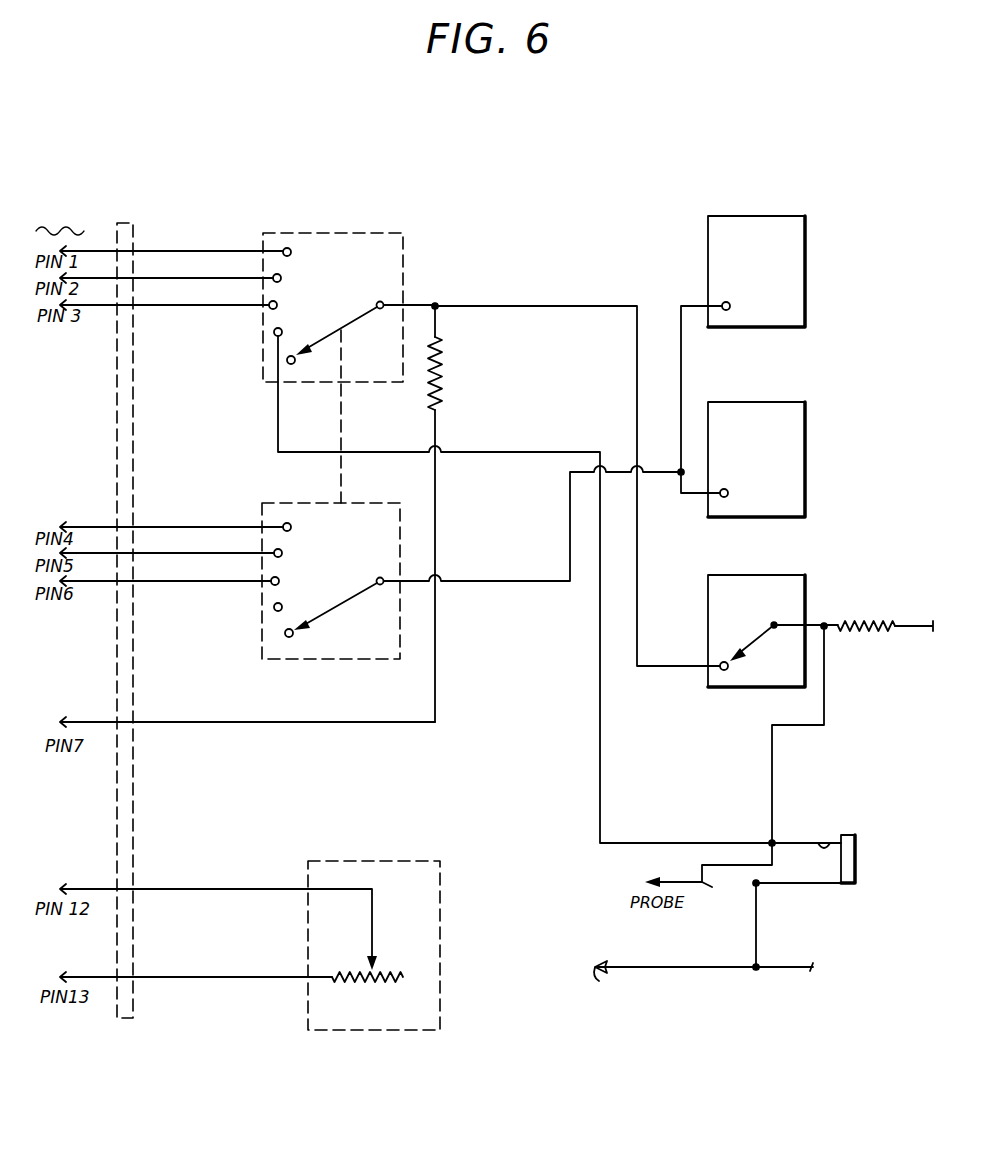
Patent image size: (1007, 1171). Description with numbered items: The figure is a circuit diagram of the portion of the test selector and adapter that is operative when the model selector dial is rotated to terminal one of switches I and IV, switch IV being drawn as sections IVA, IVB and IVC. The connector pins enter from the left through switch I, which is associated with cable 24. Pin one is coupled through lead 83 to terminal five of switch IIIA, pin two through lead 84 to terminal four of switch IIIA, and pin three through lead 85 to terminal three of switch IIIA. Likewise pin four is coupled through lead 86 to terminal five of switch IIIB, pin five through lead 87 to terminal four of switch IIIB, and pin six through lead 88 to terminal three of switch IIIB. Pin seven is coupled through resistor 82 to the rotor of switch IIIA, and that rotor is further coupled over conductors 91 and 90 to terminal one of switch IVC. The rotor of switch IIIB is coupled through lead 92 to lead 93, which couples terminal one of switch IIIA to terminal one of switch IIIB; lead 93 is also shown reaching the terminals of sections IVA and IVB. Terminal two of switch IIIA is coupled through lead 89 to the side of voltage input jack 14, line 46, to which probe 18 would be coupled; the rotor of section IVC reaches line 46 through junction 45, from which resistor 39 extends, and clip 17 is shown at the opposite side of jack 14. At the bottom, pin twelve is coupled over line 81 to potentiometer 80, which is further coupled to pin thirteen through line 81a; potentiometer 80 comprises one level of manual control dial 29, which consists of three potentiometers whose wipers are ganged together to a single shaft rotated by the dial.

The switch I is at (131, 223).
The cable 24 is at (60, 214).
The lead 83 is at (222, 250).
The lead 84 is at (215, 277).
The lead 85 is at (209, 303).
The lead 86 is at (207, 527).
The lead 87 is at (207, 554).
The lead 88 is at (207, 581).
The switch IIIA is at (382, 230).
The switch IIIB is at (384, 496).
The conductor 91 is at (415, 305).
The conductor 90 is at (523, 306).
The resistor 82 is at (444, 378).
The lead 89 is at (536, 458).
The lead 92 is at (484, 598).
The lead 93 is at (676, 497).
The meter section A IVA is at (770, 200).
The meter section B IVB is at (766, 410).
The switch IVC is at (769, 590).
The junction 45 is at (825, 622).
The resistor 39 is at (872, 622).
The line 46 is at (803, 727).
The voltage input jack 14 is at (856, 856).
The probe 18 is at (703, 902).
The clip 17 is at (717, 938).
The manual control dial 29 is at (415, 1000).
The lead to pin 12 81 is at (204, 888).
The line 81a is at (214, 972).
The potentiometer 80 is at (370, 985).